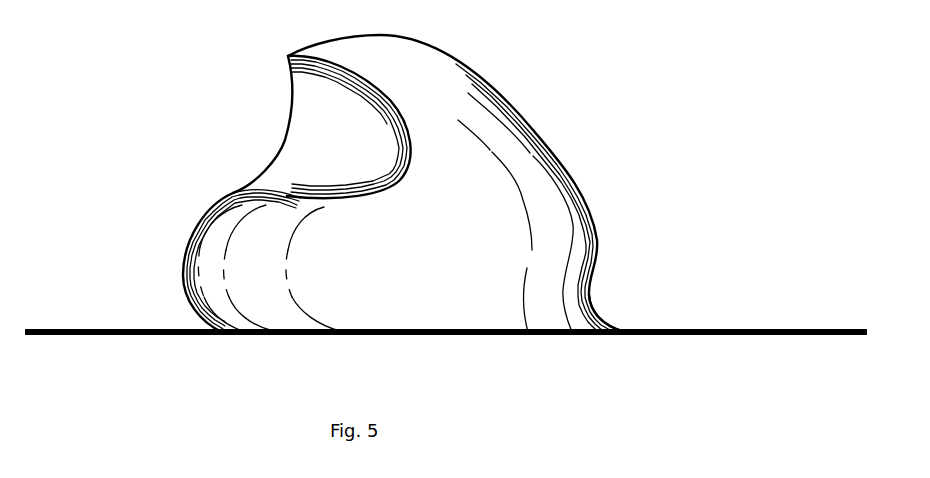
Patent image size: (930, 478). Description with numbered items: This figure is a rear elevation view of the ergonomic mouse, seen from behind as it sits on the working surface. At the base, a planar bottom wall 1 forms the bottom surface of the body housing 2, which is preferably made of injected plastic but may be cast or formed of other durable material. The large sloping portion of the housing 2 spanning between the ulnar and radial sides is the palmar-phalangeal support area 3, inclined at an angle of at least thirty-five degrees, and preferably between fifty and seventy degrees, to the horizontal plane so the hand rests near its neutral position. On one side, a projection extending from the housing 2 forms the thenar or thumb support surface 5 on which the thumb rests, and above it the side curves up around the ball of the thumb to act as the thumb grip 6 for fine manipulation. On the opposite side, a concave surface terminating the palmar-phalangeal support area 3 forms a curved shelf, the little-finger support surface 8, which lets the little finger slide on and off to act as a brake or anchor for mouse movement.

The planar bottom wall 1 is at (290, 330).
The body housing 2 is at (183, 293).
The palmar-phalangeal support area 3 is at (523, 108).
The thenar or thumb support surface 5 is at (284, 198).
The thumb grip 6 is at (318, 115).
The little-finger support surface 8 is at (590, 304).